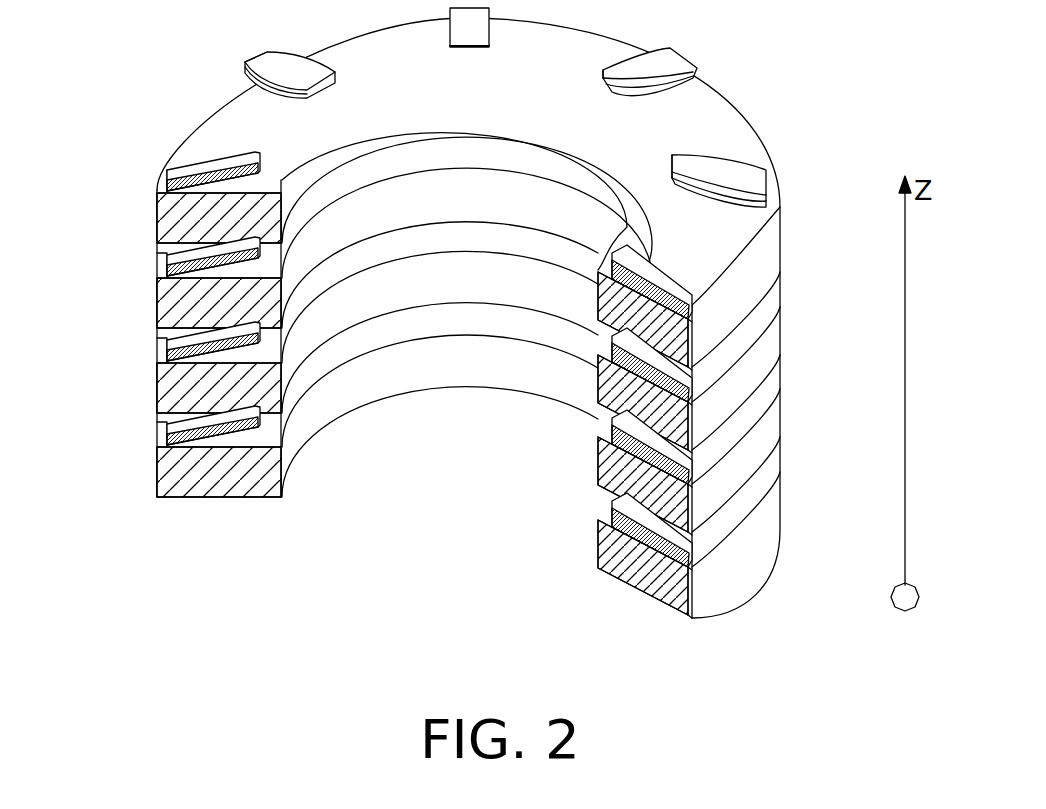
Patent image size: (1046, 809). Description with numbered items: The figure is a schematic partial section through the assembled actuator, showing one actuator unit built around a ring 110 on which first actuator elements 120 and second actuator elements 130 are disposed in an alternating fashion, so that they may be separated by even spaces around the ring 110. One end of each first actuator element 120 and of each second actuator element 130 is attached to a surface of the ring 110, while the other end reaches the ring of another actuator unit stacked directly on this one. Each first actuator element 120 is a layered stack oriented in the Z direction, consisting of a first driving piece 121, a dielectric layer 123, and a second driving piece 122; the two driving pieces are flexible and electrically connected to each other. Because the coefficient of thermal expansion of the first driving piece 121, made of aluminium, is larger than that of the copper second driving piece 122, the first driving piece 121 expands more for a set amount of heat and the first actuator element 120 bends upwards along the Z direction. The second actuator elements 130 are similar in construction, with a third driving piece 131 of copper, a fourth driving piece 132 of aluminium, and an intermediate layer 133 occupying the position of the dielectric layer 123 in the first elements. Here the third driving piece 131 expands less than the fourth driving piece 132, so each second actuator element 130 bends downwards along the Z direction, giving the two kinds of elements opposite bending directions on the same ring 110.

The ring 110 is at (187, 295).
The first actuator element 120 is at (161, 152).
The first driving piece 121 is at (170, 198).
The second driving piece 122 is at (167, 171).
The dielectric layer 123 is at (170, 184).
The second actuator element 130 is at (735, 258).
The third driving piece 131 is at (690, 312).
The fourth driving piece 132 is at (680, 292).
The second strip layer 133 is at (692, 302).